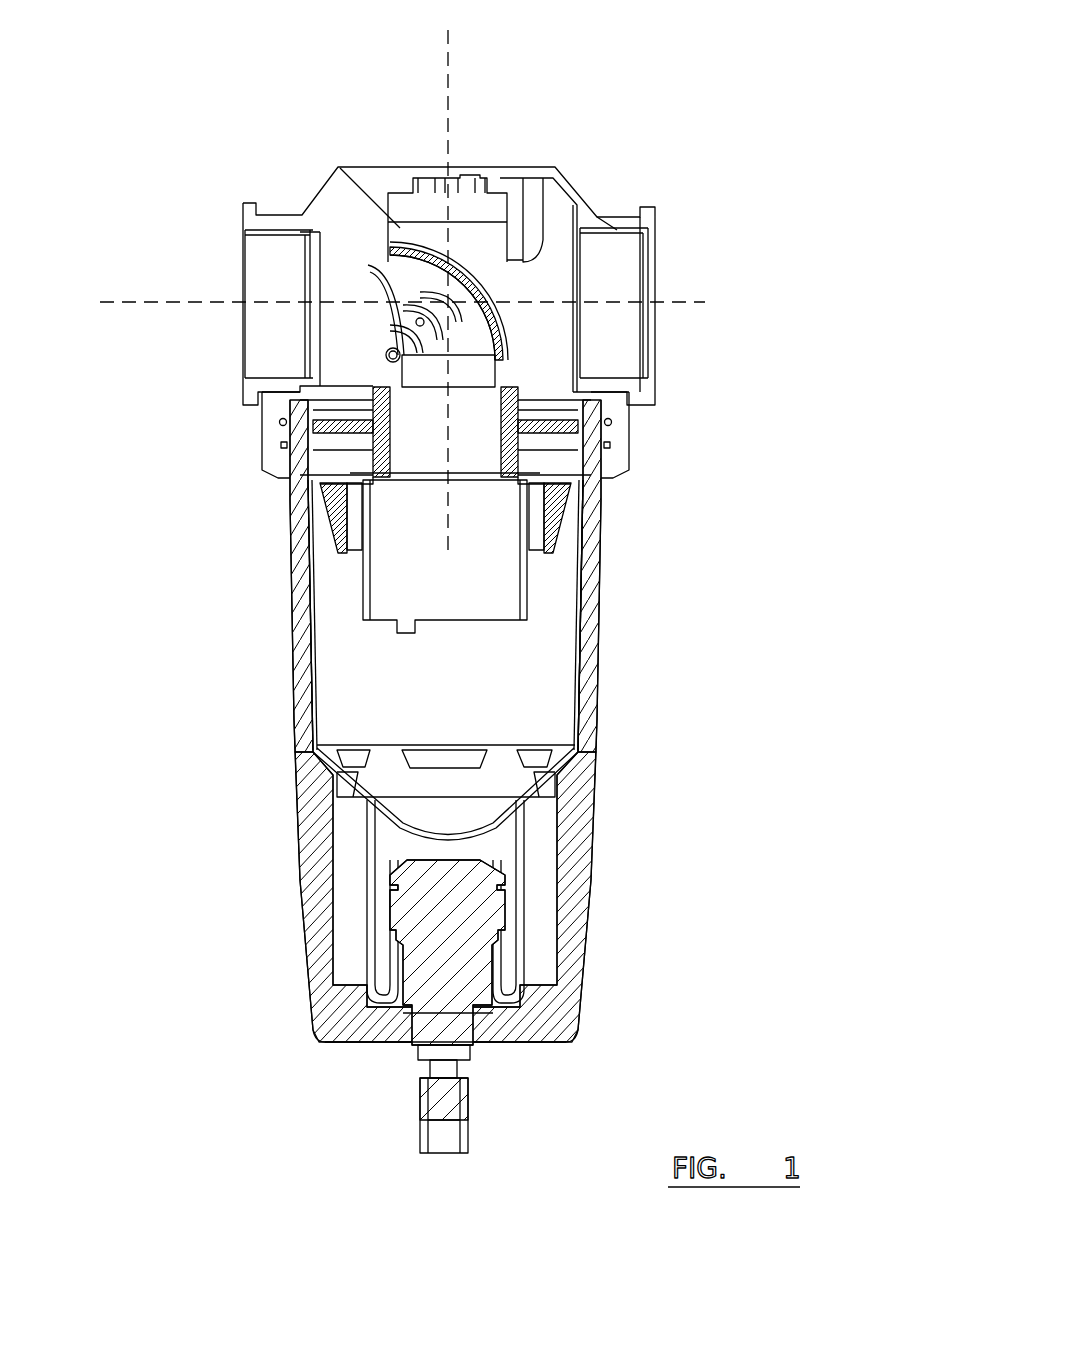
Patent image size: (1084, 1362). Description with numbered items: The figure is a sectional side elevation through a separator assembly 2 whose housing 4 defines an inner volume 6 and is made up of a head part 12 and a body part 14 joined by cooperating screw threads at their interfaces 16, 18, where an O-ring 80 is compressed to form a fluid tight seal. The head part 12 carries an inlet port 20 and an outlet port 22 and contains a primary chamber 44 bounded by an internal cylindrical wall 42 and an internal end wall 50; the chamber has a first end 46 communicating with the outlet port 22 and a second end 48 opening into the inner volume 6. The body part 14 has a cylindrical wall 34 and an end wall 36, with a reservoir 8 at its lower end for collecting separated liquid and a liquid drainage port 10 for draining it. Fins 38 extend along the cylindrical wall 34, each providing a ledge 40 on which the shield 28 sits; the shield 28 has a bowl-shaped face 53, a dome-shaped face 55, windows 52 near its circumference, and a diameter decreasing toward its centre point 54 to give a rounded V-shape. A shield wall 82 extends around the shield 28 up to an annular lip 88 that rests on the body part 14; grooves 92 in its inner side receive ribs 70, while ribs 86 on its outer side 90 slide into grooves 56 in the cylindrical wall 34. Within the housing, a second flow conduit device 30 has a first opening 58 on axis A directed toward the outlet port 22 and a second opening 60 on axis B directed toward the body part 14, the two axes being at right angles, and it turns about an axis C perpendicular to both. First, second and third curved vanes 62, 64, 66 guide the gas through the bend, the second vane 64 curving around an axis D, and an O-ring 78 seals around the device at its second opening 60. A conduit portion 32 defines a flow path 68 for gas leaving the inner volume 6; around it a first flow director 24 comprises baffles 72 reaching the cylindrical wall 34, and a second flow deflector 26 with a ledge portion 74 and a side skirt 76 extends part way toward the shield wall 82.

The separator assembly 2 is at (640, 133).
The housing 4 is at (690, 679).
The inner volume 6 is at (387, 680).
The reservoir 8 is at (533, 993).
The liquid drainage port 10 is at (450, 980).
The head part 12 is at (337, 270).
The body part 14 is at (590, 700).
The interface 16 is at (268, 458).
The interface 18 is at (622, 440).
The inlet port 20 is at (630, 255).
The outlet port 22 is at (265, 352).
The first flow director 24 is at (545, 370).
The second flow deflector 26 is at (560, 483).
The shield 28 is at (573, 817).
The flow conduit device 30 is at (468, 240).
The conduit portion 32 is at (410, 572).
The cylindrical wall 34 is at (360, 630).
The end wall 36 is at (335, 1043).
The fins 38 is at (333, 800).
The ledge 40 is at (388, 780).
The internal cylindrical wall 42 is at (345, 192).
The primary chamber 44 is at (395, 285).
The first end 46 is at (237, 240).
The second end 48 is at (383, 357).
The internal end wall 50 is at (528, 262).
The windows 52 is at (440, 745).
The bowl-shaped face 53 is at (368, 835).
The centre point 54 is at (396, 882).
The dome-shaped face 55 is at (378, 858).
The grooves 56 is at (583, 474).
The first opening 58 is at (370, 280).
The second opening 60 is at (483, 330).
The first curved vane 62 is at (395, 340).
The second curved vane 64 is at (420, 294).
The third curved vane 66 is at (433, 225).
The flow path 68 is at (350, 600).
The ribs 70 is at (280, 428).
The baffles 72 is at (595, 430).
The ledge portion 74 is at (330, 498).
The side skirt 76 is at (350, 520).
The O-ring 78 is at (333, 382).
The O-ring 80 is at (610, 422).
The shield wall 82 is at (587, 632).
The ribs 86 is at (318, 485).
The lip 88 is at (320, 398).
The outer side 90 is at (587, 592).
The grooves 92 is at (580, 528).
The first axis A is at (392, 302).
The second axis B is at (451, 276).
The axis C is at (390, 352).
The axis D is at (548, 290).